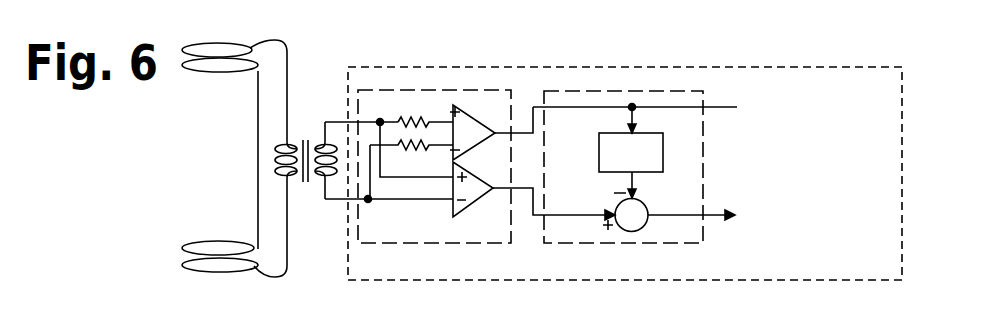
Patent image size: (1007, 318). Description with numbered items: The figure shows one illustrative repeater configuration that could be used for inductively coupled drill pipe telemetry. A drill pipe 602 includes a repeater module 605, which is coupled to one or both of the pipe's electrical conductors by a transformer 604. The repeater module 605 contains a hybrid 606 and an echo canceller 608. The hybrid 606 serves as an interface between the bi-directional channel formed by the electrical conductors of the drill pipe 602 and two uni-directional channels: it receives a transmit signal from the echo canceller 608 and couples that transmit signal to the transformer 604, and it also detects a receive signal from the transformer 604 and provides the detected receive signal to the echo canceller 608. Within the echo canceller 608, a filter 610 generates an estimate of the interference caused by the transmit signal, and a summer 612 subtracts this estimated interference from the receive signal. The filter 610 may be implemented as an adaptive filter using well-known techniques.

The drill pipe 602 is at (181, 40).
The transformer 604 is at (310, 132).
The repeater module 605 is at (397, 282).
The hybrid 606 is at (408, 243).
The echo canceller 608 is at (623, 183).
The filter 610 is at (600, 157).
The summer 612 is at (642, 203).